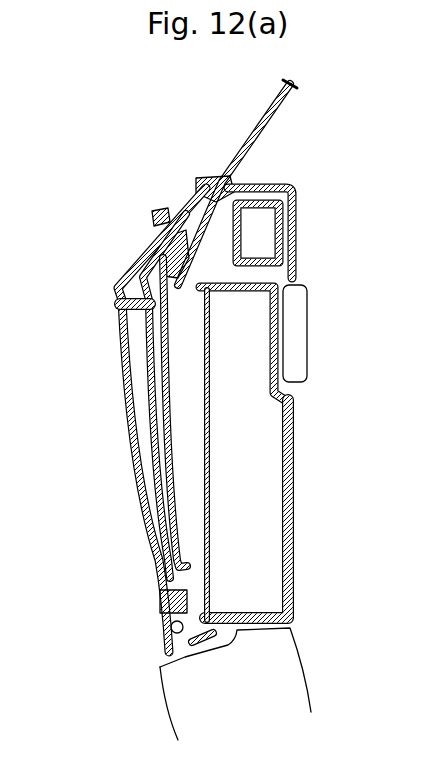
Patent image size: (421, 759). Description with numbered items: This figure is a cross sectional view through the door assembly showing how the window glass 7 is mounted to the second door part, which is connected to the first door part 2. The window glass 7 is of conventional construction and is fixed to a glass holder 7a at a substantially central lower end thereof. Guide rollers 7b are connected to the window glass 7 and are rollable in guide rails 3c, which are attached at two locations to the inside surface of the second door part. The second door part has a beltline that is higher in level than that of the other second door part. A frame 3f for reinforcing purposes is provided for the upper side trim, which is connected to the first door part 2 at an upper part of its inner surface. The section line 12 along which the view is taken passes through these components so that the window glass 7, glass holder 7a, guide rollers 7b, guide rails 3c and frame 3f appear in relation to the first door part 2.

The first door part 2 is at (290, 467).
The guide rails 3c is at (120, 305).
The frame 3f is at (296, 207).
The window glass 7 is at (262, 122).
The glass holder 7a is at (160, 214).
The guide rollers 7b is at (162, 252).
The sash assembly 12 is at (283, 190).